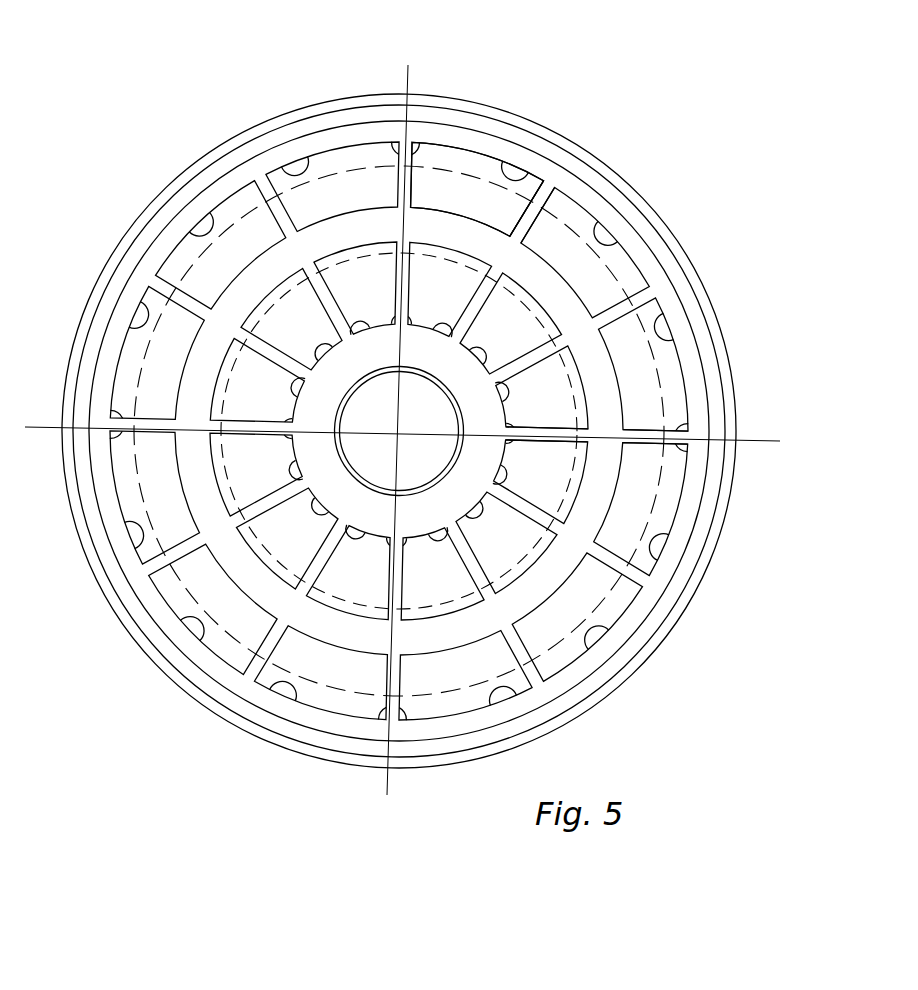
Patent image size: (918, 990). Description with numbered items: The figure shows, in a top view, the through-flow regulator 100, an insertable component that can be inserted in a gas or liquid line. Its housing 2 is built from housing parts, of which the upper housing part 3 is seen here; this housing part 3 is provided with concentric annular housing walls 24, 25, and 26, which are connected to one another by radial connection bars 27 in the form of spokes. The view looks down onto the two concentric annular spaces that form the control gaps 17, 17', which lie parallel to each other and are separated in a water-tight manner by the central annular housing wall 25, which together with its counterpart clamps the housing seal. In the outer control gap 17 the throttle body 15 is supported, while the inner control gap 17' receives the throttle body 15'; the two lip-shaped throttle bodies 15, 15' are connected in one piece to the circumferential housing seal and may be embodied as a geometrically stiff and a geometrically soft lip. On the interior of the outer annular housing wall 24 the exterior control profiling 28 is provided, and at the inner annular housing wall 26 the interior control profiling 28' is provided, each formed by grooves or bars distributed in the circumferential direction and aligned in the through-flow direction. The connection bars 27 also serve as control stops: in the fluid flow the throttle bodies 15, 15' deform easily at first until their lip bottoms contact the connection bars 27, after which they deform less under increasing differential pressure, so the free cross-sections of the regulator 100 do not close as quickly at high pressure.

The through-flow regulator 100 is at (549, 72).
The housing 2 is at (258, 123).
The annular housing wall 24 is at (363, 133).
The control gap 17 is at (399, 409).
The control gap 17' is at (398, 430).
The throttle body 15 is at (154, 498).
The throttle body 15' is at (295, 525).
The control profiling 28 is at (399, 391).
The control profiling 28' is at (399, 410).
The connection bar 27 is at (530, 215).
The annular housing wall 25 is at (360, 247).
The annular housing wall 26 is at (327, 390).
The housing part 3 is at (433, 366).